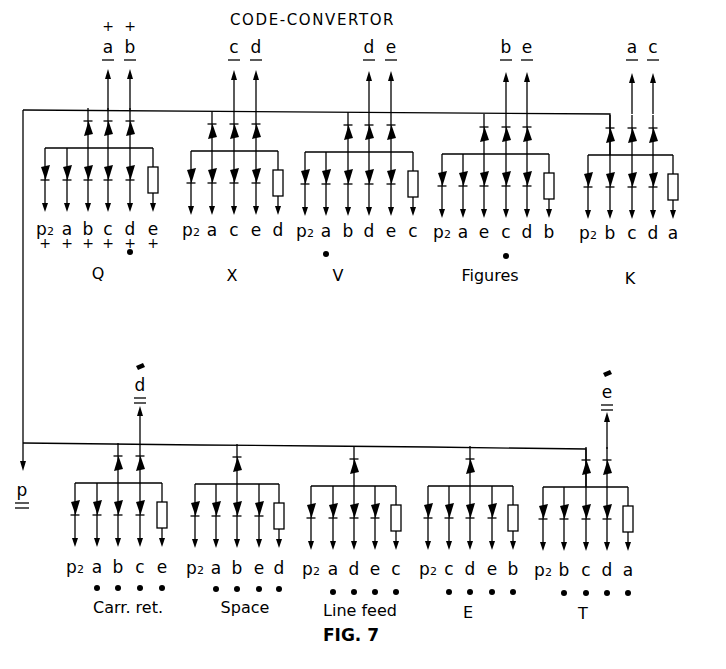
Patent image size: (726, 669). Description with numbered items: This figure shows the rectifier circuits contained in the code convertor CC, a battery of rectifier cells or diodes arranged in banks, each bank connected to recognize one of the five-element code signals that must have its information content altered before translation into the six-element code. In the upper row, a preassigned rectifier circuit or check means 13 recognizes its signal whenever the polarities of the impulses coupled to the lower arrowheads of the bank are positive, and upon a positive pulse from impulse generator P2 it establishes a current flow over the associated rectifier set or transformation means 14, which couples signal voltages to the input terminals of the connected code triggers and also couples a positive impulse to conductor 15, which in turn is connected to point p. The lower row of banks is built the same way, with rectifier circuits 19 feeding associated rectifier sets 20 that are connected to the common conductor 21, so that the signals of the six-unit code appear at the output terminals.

The rectifier circuit 13 is at (36, 180).
The rectifier set 14 is at (79, 128).
The conductor 15 is at (45, 110).
The rectifier circuit 19 is at (65, 515).
The rectifier set 20 is at (109, 463).
The conductor 21 is at (60, 443).